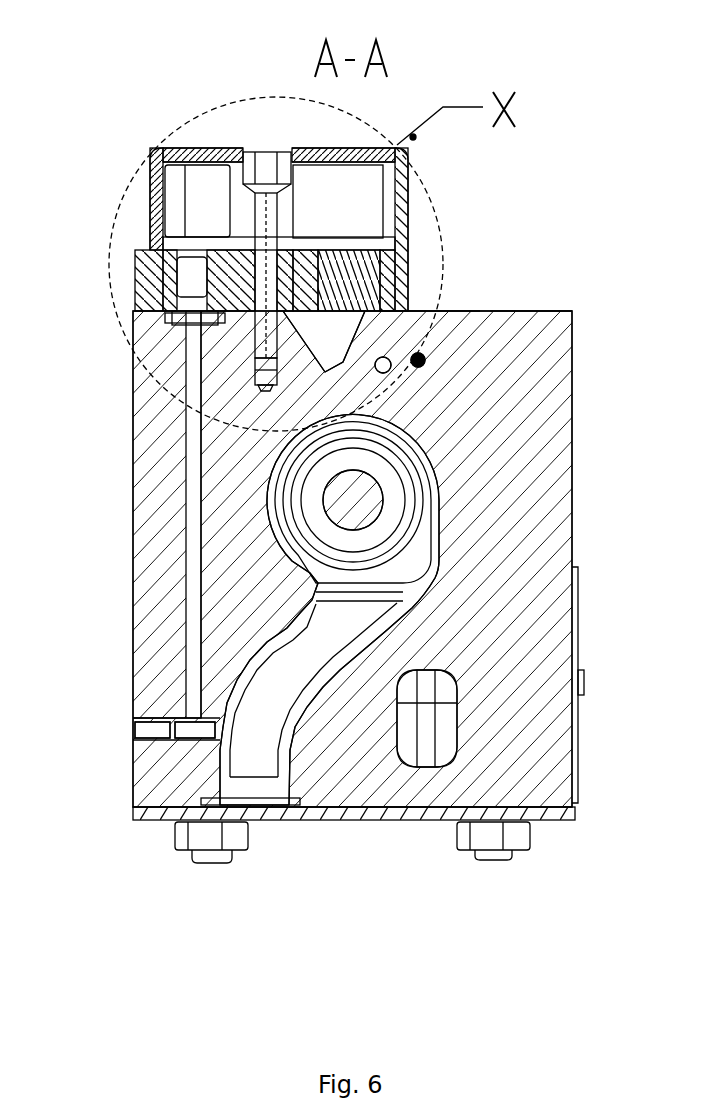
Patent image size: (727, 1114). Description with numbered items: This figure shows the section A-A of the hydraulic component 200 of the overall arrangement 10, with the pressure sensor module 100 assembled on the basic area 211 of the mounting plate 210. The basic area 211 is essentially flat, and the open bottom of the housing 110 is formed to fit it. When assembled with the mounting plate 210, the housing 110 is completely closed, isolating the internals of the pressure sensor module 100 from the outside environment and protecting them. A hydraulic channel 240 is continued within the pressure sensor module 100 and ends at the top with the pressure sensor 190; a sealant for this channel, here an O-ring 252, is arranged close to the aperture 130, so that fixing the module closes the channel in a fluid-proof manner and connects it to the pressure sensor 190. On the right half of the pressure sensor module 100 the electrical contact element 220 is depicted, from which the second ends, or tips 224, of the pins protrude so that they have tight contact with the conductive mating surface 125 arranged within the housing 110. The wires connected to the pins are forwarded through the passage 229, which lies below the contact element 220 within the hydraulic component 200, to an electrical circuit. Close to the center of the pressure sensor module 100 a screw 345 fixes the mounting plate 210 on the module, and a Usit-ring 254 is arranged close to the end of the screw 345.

The valve assembly 10 is at (586, 96).
The pressure sensor module 100 is at (135, 262).
The housing 110 is at (203, 160).
The conductive mating surface 125 is at (341, 246).
The aperture 130 is at (180, 322).
The pressure sensor 190 is at (160, 238).
The hydraulic component 200 is at (133, 522).
The mounting plate 210 is at (432, 311).
The basic area 211 is at (540, 310).
The electrical contact element 220 is at (397, 255).
The second ends (tips) of the pins 224 is at (362, 240).
The passage 229 is at (388, 300).
The hydraulic channel 240 is at (193, 452).
The O-ring 252 is at (183, 320).
The Usit-ring 254 is at (246, 157).
The screw 345 is at (283, 190).